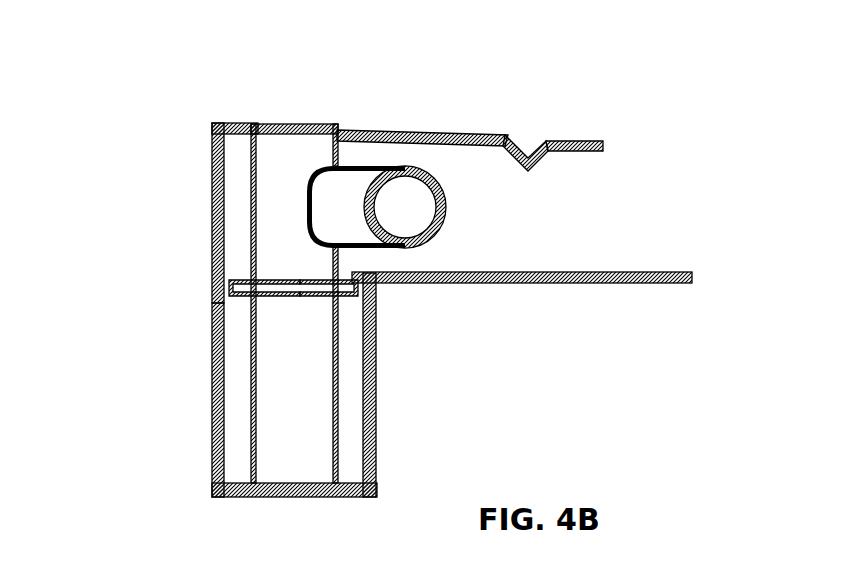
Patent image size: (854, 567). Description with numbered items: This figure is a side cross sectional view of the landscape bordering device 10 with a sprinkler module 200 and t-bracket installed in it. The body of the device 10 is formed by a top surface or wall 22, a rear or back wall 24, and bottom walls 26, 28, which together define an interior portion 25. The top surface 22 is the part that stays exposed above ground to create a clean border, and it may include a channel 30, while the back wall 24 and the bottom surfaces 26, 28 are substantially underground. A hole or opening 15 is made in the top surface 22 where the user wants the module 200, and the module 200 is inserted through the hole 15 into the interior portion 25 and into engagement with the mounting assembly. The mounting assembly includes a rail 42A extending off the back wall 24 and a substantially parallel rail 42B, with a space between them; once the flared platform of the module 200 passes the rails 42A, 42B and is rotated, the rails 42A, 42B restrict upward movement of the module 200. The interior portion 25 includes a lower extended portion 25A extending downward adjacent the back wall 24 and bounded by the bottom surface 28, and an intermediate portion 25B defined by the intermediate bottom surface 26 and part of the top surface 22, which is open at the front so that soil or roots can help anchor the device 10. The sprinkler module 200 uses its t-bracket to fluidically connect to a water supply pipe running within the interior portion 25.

The bordering system or device 10 is at (459, 83).
The hole or opening 15 is at (248, 126).
The top surface or wall 22 is at (378, 132).
The rear or back wall 24 is at (212, 222).
The interior portion 25 is at (553, 206).
The lower extended portion 25A is at (224, 361).
The intermediate portion 25B is at (483, 193).
The intermediate bottom surface 26 is at (510, 283).
The bottom surface 28 is at (263, 497).
The channel 30 is at (533, 133).
The rail 42A is at (233, 283).
The rail 42B is at (360, 278).
The module 200 is at (250, 190).